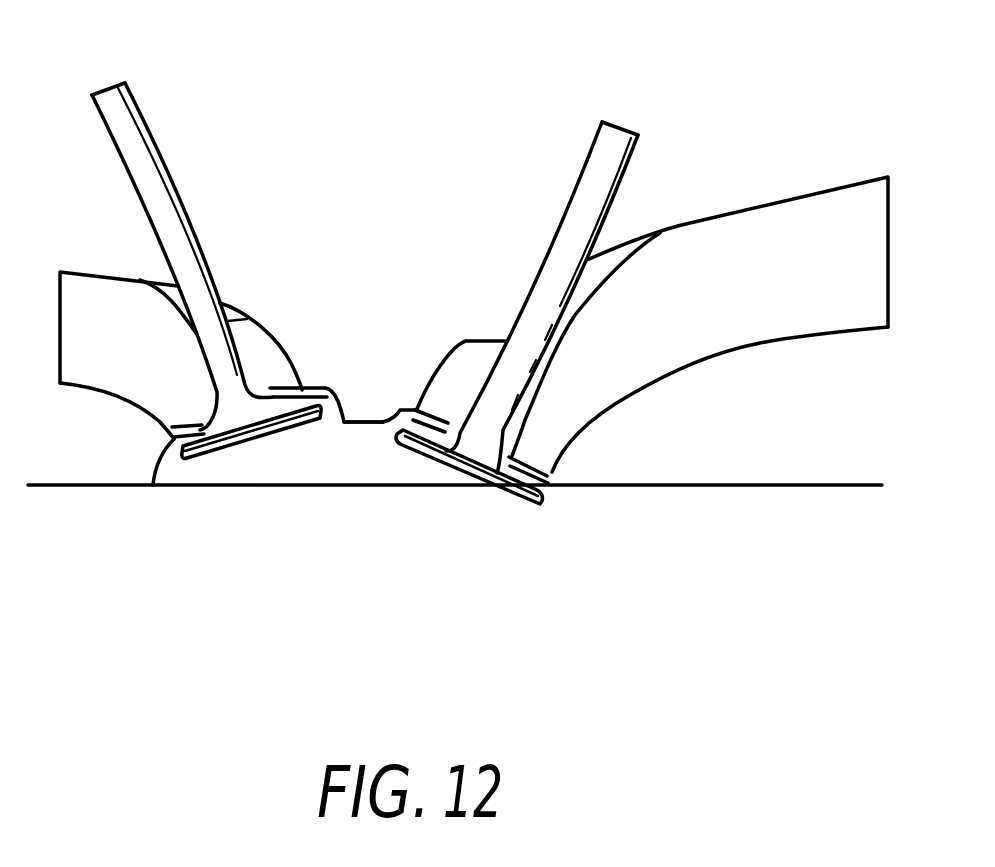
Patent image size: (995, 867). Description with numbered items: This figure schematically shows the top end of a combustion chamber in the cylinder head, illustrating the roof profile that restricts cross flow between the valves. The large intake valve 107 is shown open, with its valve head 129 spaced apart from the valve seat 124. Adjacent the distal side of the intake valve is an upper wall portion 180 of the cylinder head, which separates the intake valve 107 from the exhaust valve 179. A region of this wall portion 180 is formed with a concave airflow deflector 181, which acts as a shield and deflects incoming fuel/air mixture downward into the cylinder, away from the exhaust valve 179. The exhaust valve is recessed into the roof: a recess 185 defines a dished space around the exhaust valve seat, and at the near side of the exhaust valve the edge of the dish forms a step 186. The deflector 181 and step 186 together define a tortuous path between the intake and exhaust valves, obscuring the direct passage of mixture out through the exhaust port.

The exhaust valve 179 is at (155, 380).
The step 186 is at (349, 378).
The upper wall portion 180 is at (373, 405).
The airflow deflector 181 is at (403, 372).
The valve seat 124 is at (538, 440).
The intake valve 107 is at (596, 455).
The valve head 129 is at (466, 472).
The recess 185 is at (248, 496).